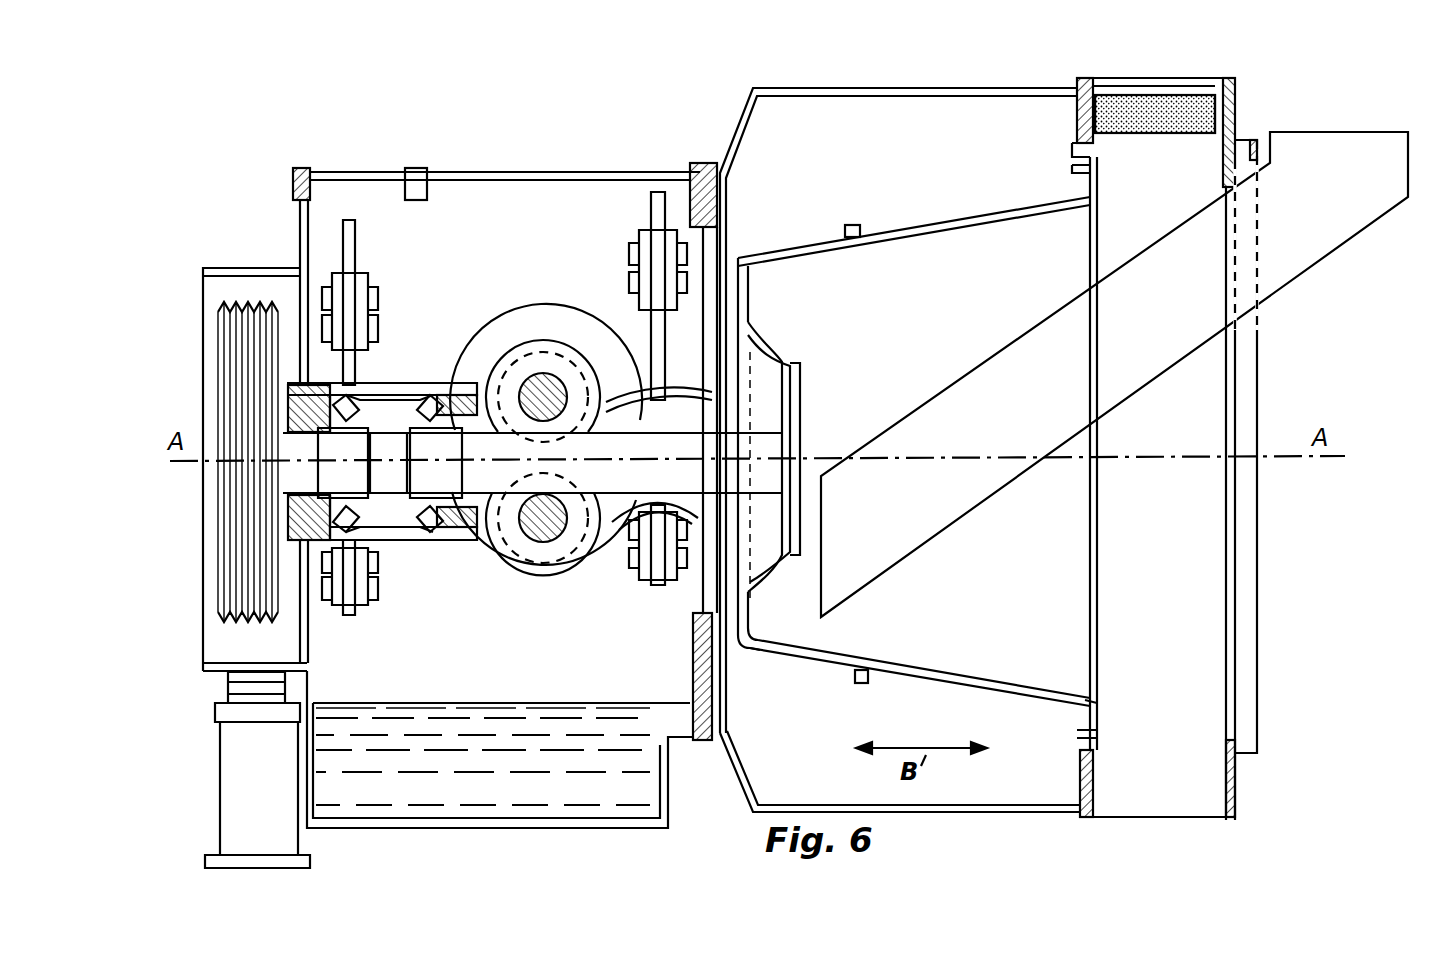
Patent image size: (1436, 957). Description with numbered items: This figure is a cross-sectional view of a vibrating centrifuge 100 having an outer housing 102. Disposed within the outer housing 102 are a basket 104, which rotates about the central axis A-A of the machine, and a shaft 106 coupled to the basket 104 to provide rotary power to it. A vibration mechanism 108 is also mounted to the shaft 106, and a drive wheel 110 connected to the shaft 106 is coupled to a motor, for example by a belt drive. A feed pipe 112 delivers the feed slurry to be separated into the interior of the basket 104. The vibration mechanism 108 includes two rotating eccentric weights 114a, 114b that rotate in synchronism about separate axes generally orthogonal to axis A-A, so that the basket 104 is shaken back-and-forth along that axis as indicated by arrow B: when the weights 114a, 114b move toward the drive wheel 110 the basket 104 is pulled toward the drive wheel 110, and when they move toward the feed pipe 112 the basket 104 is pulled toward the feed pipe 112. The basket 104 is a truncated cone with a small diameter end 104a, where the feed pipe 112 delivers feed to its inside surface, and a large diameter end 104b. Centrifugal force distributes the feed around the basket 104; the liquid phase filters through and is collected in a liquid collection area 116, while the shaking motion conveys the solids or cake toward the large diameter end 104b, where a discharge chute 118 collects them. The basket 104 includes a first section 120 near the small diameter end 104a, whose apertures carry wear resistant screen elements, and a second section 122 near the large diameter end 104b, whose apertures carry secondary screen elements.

The vibrating centrifuge 100 is at (778, 68).
The outer housing 102 is at (964, 88).
The basket 104 is at (1009, 196).
The small diameter end 104a is at (745, 650).
The large diameter end 104b is at (1098, 686).
The shaft 106 is at (703, 588).
The vibration mechanism 108 is at (585, 304).
The drive wheel 110 is at (232, 318).
The feed pipe 112 is at (1114, 442).
The eccentric weight 114a is at (540, 392).
The eccentric weight 114b is at (528, 545).
The liquid collection area 116 is at (793, 773).
The discharge chute 118 is at (1149, 783).
The first section 120 is at (818, 244).
The second section 122 is at (958, 221).